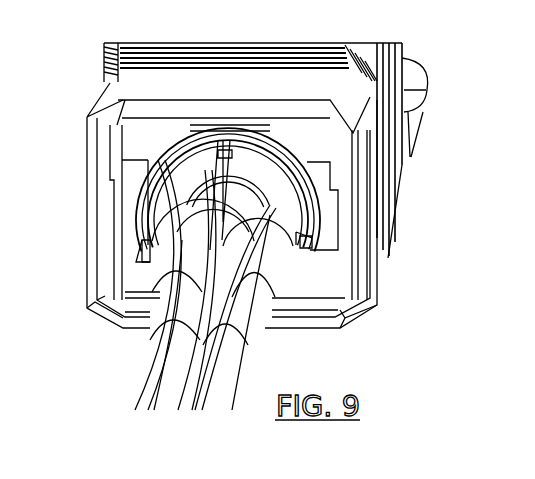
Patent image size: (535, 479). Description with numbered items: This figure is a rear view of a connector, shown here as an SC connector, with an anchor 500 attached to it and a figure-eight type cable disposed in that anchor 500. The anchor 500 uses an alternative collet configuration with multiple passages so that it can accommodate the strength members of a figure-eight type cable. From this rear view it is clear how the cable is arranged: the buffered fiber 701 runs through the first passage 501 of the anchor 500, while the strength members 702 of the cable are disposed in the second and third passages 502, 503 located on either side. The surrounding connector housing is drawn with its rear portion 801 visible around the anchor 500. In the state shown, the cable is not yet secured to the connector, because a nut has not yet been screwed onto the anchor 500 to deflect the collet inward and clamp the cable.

The anchor 500 is at (280, 157).
The first passage 501 is at (240, 318).
The second passage 502 is at (145, 250).
The third passage 503 is at (310, 240).
The buffered fiber 701 is at (173, 322).
The strength members 702 is at (358, 312).
The latch member 801 is at (365, 158).